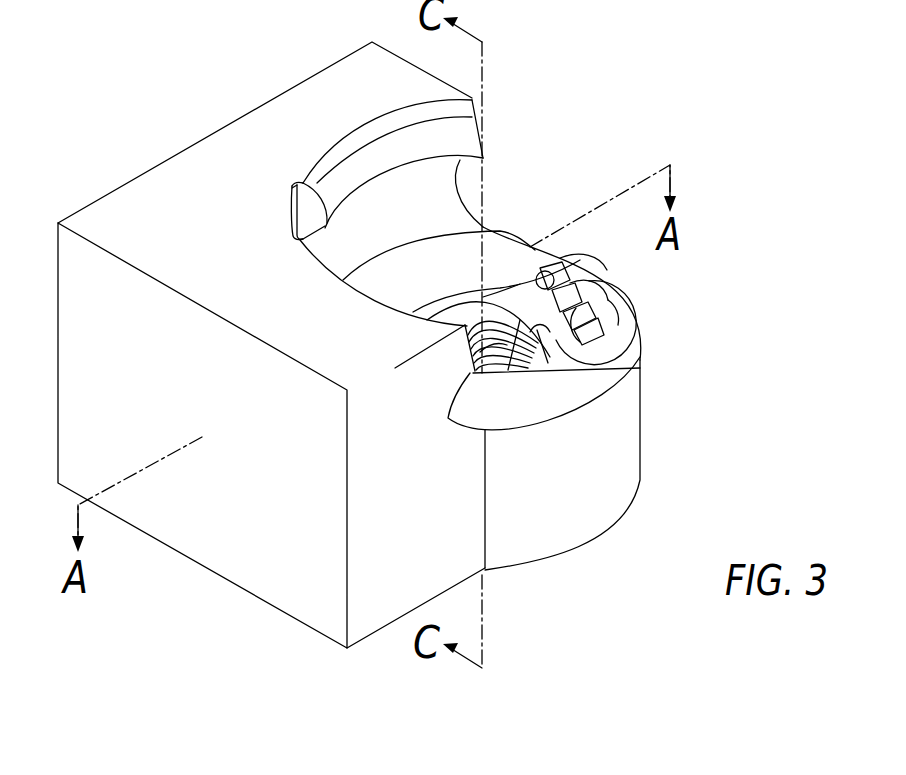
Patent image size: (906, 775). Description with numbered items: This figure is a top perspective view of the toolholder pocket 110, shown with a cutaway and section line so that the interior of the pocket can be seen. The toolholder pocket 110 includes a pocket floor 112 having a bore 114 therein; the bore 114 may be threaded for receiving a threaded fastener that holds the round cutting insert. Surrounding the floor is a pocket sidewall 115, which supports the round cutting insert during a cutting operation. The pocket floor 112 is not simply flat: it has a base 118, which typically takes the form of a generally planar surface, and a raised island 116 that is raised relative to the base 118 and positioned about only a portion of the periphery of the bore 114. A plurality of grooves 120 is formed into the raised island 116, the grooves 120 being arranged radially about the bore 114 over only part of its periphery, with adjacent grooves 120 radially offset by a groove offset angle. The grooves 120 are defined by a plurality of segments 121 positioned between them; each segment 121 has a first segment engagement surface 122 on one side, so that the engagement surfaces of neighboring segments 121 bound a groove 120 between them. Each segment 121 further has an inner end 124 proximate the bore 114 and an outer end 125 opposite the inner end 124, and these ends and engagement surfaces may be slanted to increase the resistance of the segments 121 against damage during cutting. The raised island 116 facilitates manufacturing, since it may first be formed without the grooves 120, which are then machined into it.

The toolholder pocket 110 is at (155, 100).
The pocket floor 112 is at (512, 414).
The bore 114 is at (482, 362).
The pocket sidewall 115 is at (454, 157).
The raised island 116 is at (617, 337).
The base 118 is at (479, 275).
The grooves 120 is at (581, 273).
The segments 121 is at (605, 362).
The first segment engagement surface 122 is at (605, 296).
The inner end 124 is at (544, 340).
The outer end 125 is at (600, 274).